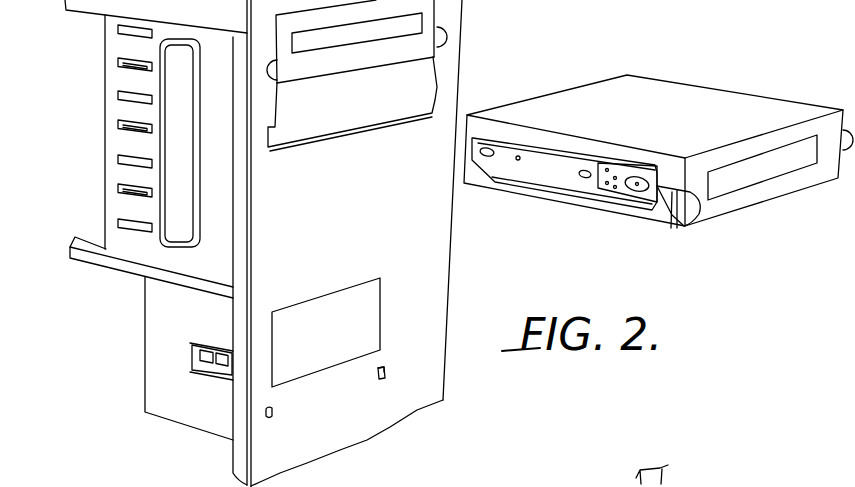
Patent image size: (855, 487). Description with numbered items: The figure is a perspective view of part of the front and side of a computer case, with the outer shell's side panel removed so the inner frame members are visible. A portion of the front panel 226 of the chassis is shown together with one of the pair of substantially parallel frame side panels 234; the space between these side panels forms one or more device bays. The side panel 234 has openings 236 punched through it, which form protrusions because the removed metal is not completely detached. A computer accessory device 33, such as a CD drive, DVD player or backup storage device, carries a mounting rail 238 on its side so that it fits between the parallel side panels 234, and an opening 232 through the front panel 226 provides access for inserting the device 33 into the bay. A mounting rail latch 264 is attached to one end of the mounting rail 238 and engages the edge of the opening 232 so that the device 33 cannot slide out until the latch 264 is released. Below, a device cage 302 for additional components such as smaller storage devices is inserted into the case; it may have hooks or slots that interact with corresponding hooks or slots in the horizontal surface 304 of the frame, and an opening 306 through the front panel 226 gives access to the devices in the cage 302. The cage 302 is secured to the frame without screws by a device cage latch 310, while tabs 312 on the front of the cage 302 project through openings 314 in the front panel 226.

The computer accessory device 33 is at (738, 102).
The front panel 226 is at (444, 273).
The opening 232 is at (357, 75).
The frame side panel 234 is at (115, 42).
The openings 236 is at (117, 121).
The mounting rail 238 is at (573, 183).
The mounting rail latch 264 is at (665, 200).
The device cage 302 is at (155, 365).
The horizontal surface 304 is at (95, 235).
The opening 306 is at (326, 332).
The device cage latch 310 is at (203, 373).
The tabs 312 is at (383, 376).
The openings 314 is at (380, 366).